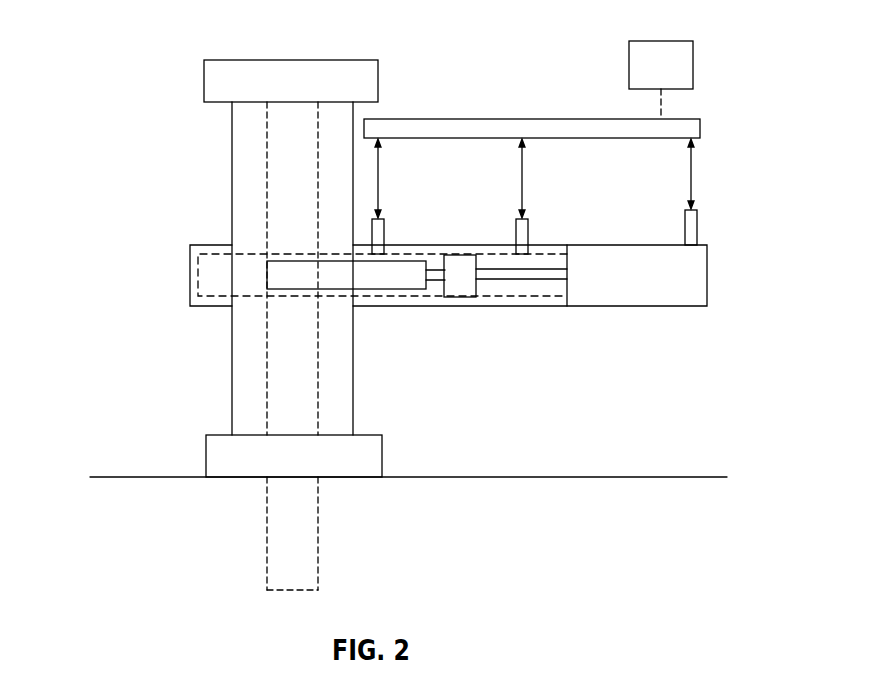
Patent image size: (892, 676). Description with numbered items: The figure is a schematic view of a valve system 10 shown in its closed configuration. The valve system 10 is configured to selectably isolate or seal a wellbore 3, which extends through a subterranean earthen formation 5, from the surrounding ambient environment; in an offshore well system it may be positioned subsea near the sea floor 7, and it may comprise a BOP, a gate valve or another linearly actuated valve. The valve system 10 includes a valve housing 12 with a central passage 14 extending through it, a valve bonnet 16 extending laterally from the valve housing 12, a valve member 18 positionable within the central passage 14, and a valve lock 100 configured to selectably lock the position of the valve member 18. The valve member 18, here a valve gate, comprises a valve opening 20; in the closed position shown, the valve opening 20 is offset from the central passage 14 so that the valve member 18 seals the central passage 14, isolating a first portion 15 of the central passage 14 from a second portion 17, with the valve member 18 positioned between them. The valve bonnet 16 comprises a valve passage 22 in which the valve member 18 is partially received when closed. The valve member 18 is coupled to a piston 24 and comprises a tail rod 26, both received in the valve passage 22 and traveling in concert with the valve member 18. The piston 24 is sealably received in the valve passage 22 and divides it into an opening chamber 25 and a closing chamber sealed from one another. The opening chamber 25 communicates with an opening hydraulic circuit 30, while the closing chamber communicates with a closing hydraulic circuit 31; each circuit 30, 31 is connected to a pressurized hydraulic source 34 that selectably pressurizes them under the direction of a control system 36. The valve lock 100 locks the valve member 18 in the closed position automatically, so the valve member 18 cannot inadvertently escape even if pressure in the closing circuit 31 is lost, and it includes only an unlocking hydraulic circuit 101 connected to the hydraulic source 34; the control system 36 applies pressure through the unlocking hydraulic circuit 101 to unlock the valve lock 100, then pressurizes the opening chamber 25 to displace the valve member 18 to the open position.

The valve system 10 is at (150, 20).
The valve housing 12 is at (203, 82).
The central passage 14 is at (280, 201).
The second portion 17 is at (285, 147).
The wellbore 3 is at (318, 527).
The first portion 15 is at (287, 379).
The sea floor 7 is at (527, 477).
The subterranean earthen formation 5 is at (483, 543).
The valve lock 100 is at (692, 283).
The valve opening 20 is at (333, 277).
The valve member 18 is at (292, 277).
The piston 24 is at (457, 286).
The valve passage 22 is at (501, 287).
The opening chamber 25 is at (532, 287).
The tail rod 26 is at (545, 277).
The valve bonnet 16 is at (467, 250).
The closing hydraulic circuit 31 is at (380, 180).
The opening hydraulic circuit 30 is at (525, 180).
The unlocking hydraulic circuit 101 is at (692, 172).
The pressurized hydraulic source 34 is at (532, 119).
The control system 36 is at (693, 65).